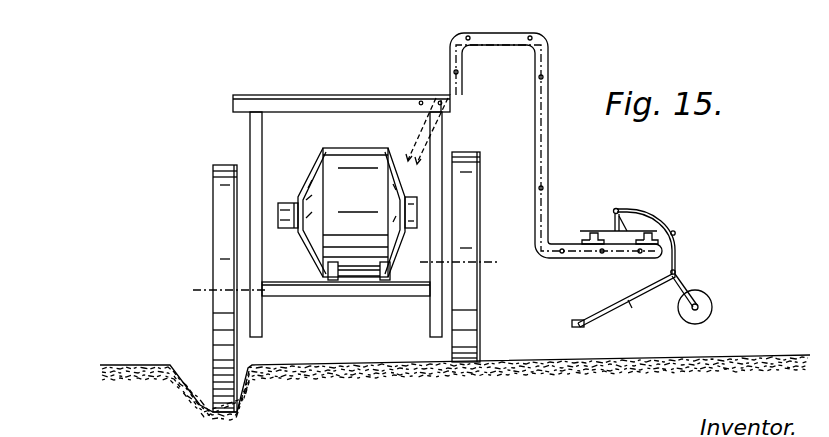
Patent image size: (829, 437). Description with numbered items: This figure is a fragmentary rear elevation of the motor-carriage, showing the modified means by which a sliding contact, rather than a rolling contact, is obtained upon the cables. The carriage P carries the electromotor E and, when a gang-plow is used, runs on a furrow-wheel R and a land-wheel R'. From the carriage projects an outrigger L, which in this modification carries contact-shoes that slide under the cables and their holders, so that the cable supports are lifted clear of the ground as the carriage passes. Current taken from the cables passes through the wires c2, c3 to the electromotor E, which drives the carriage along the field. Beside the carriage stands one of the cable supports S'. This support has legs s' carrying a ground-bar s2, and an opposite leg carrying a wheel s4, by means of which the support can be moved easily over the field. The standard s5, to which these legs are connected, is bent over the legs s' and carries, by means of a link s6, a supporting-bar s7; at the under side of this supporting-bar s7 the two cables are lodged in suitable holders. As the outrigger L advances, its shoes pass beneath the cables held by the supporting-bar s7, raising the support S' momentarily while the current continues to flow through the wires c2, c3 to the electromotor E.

The carriage P is at (256, 160).
The electromotor E is at (347, 214).
The furrow-wheel R is at (209, 288).
The land-wheel R' is at (480, 257).
The outrigger L is at (557, 172).
The wire c2 is at (556, 100).
The wire c3 is at (449, 126).
The support S' is at (648, 268).
The leg s' is at (629, 316).
The ground-bar s2 is at (565, 304).
The wheel s4 is at (712, 305).
The standard s5 is at (677, 234).
The link s6 is at (633, 204).
The supporting-bar s7 is at (615, 226).